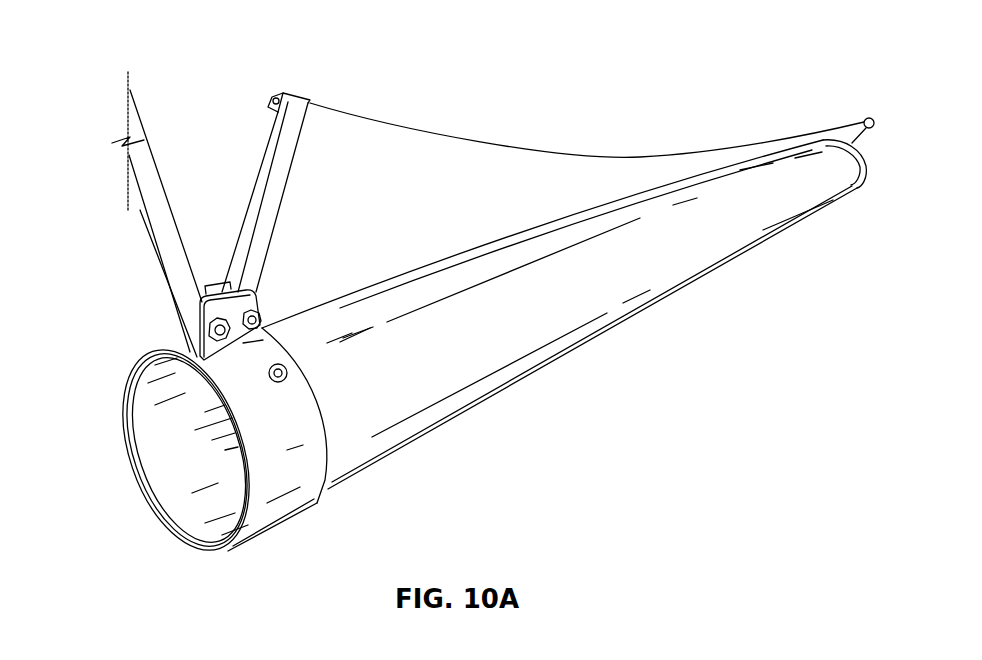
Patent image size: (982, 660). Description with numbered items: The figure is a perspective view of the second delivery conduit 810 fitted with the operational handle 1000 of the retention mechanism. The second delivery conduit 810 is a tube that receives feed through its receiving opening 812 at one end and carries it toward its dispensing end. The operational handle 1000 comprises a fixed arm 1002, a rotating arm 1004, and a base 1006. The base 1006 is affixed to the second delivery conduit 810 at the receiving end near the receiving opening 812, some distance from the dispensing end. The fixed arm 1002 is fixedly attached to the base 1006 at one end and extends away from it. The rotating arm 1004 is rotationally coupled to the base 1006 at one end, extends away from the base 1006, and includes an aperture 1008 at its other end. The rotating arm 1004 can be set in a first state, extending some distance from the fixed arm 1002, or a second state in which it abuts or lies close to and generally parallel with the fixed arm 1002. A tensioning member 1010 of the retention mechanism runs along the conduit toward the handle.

The operational handle 1000 is at (214, 68).
The fixed arm 1002 is at (176, 246).
The rotating arm 1004 is at (283, 183).
The base 1006 is at (196, 310).
The aperture 1008 is at (275, 137).
The tensioning member 1010 is at (618, 157).
The second delivery conduit 810 is at (540, 320).
The receiving opening 812 is at (180, 457).